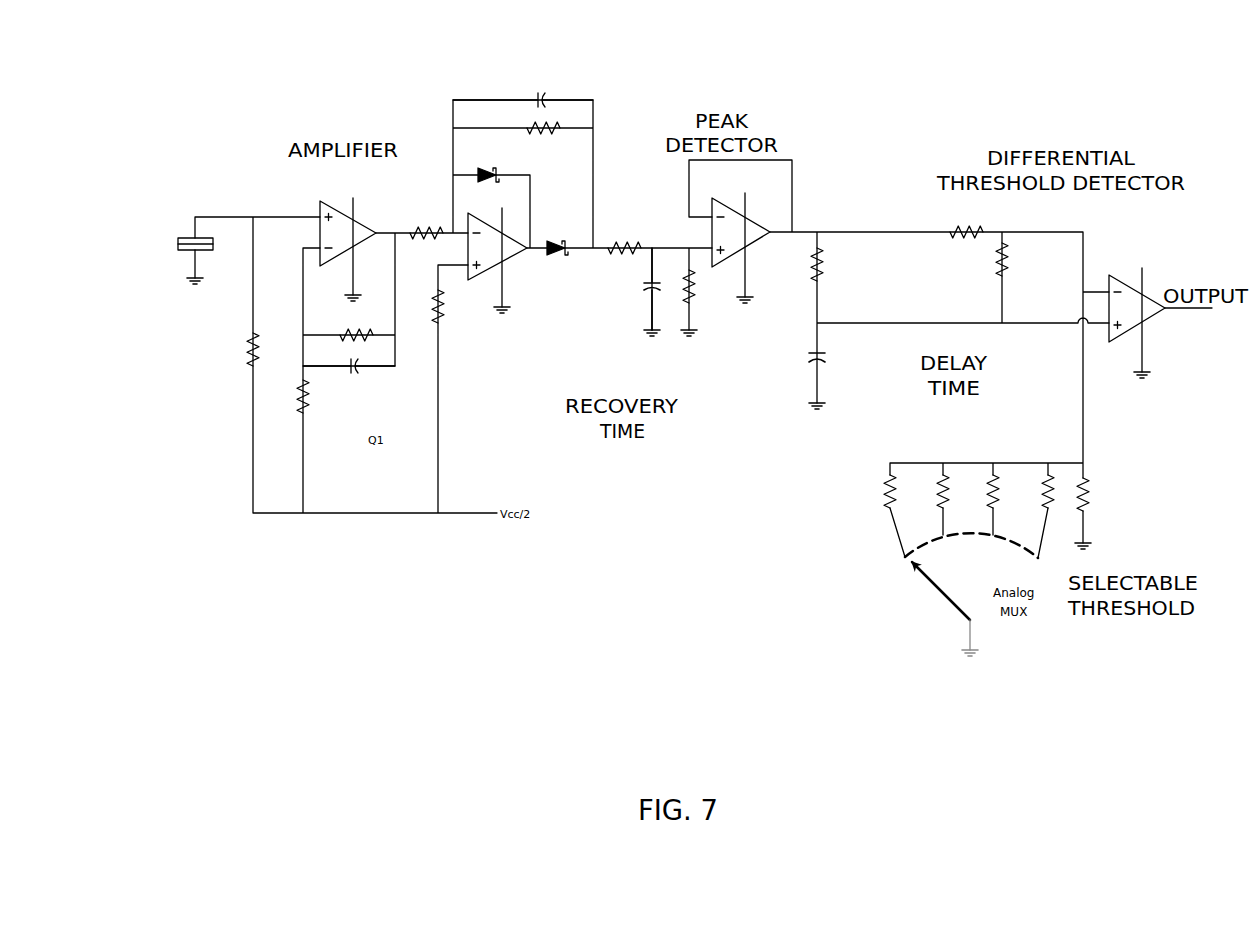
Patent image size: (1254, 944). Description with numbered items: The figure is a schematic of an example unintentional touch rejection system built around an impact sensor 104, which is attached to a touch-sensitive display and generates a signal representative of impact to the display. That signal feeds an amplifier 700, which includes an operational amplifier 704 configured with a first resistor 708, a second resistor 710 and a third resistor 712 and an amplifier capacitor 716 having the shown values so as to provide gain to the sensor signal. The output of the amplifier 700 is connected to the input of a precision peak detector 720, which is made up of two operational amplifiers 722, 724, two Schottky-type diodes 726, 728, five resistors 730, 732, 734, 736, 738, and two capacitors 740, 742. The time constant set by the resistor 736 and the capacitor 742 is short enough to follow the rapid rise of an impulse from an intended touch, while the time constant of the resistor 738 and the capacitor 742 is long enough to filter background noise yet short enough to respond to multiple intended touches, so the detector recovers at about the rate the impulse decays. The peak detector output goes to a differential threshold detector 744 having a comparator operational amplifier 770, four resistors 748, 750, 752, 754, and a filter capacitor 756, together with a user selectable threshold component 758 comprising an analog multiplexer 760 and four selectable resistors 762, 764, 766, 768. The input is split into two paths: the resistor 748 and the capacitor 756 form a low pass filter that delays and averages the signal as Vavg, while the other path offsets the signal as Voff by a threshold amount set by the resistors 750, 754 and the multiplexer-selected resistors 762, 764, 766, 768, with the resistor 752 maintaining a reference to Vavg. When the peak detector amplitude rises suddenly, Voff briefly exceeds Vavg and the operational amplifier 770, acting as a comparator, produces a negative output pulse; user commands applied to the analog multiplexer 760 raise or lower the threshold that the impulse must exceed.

The impact sensor 104 is at (178, 242).
The amplifier 700 is at (272, 197).
The operational amplifier U1 704 is at (361, 222).
The resistor R1 708 is at (252, 334).
The resistor R2 710 is at (302, 382).
The resistor R3 712 is at (343, 333).
The capacitor C1 716 is at (360, 368).
The precision peak detector 720 is at (720, 95).
The operational amplifier U1 (U2) 722 is at (478, 298).
The operational amplifier U2 (U3) 724 is at (710, 232).
The Schottky-type diode D1 726 is at (477, 172).
The Schottky-type diode D2 728 is at (551, 255).
The resistor R4 730 is at (426, 230).
The resistor R5 732 is at (527, 125).
The resistor R6 734 is at (438, 313).
The resistor R7 736 is at (607, 243).
The resistor R8 738 is at (688, 302).
The capacitor C2 740 is at (545, 97).
The capacitor C3 742 is at (660, 292).
The differential threshold detector 744 is at (1108, 230).
The resistor R9 748 is at (818, 245).
The resistor R10 750 is at (968, 239).
The resistor R11 752 is at (1012, 281).
The resistor R12 754 is at (1093, 505).
The capacitor C4 756 is at (815, 352).
The user selectable threshold component 758 is at (1132, 475).
The analog multiplexer 760 is at (960, 618).
The resistor R13 762 is at (892, 512).
The resistor R14 764 is at (945, 478).
The resistor R15 766 is at (997, 478).
The resistor R16 768 is at (1048, 478).
The operational amplifier U4 770 is at (1153, 293).